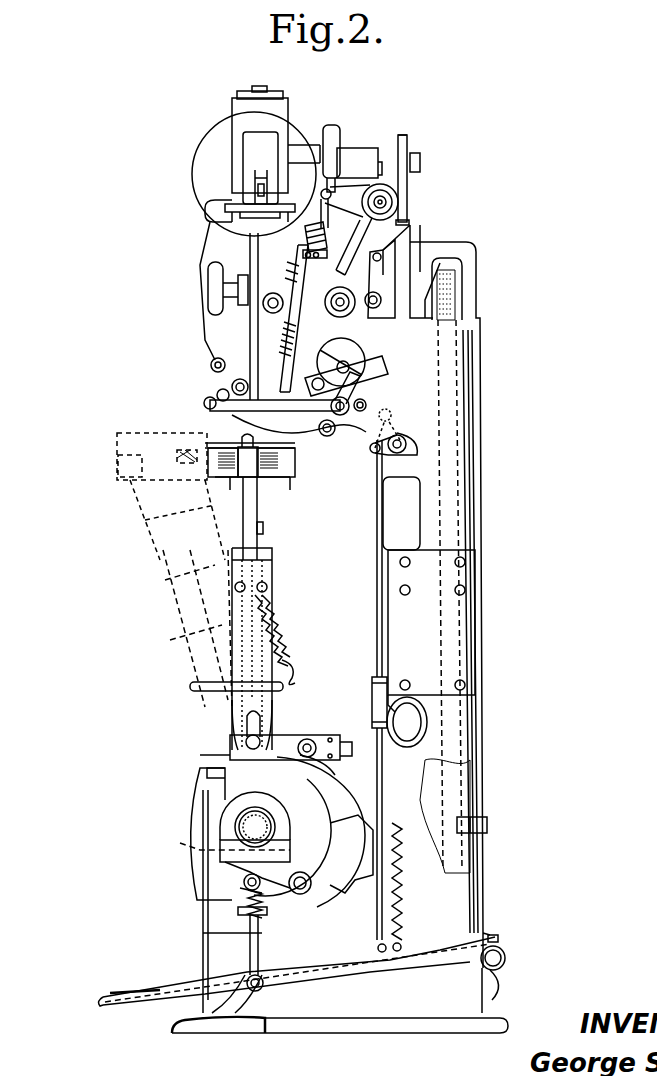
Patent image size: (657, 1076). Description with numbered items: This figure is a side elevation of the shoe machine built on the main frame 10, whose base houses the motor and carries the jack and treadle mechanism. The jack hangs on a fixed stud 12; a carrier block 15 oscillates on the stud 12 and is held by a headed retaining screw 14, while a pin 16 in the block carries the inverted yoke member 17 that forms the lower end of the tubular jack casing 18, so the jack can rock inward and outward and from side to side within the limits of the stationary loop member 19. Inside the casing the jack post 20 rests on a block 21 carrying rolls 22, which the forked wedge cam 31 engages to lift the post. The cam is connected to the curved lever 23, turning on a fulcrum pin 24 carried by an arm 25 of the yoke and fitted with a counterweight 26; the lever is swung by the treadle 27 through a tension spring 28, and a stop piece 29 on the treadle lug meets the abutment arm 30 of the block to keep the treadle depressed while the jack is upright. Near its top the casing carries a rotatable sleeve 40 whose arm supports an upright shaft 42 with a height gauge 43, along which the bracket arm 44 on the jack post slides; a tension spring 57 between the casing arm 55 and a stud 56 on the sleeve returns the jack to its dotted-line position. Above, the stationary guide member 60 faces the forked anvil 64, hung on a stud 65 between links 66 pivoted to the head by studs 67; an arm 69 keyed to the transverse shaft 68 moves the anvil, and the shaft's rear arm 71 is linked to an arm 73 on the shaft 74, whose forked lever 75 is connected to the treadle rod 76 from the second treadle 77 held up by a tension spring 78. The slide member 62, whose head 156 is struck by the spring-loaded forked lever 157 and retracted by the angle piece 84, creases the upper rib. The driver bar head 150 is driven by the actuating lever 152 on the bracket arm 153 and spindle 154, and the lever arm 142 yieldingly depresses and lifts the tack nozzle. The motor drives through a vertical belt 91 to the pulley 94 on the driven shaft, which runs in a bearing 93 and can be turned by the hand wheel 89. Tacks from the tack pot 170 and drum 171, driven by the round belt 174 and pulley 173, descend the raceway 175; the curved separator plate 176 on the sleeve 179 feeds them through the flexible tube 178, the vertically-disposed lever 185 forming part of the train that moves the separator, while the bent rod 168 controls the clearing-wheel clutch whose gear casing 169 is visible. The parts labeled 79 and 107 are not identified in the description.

The main frame 10 is at (460, 862).
The fixed horizontal stud 12 is at (218, 839).
The headed retaining screw 14 is at (250, 829).
The carrier block 15 is at (262, 872).
The pin 16 is at (220, 846).
The inverted yoke member 17 is at (228, 806).
The tubular jack casing 18 is at (236, 627).
The stationary loop member 19 is at (190, 686).
The jack post 20 is at (254, 634).
The block 21 is at (247, 730).
The rolls 22 is at (246, 742).
The curved lever 23 is at (344, 792).
The fulcrum pin 24 is at (303, 893).
The arm 25 is at (297, 866).
The counterweight 26 is at (356, 890).
The treadle 27 is at (234, 1012).
The tension spring 28 is at (255, 892).
The stop piece 29 is at (205, 935).
The abutment arm 30 is at (252, 874).
The forked wedge cam 31 is at (290, 738).
The rotatable sleeve 40 is at (178, 593).
The upright shaft 42 is at (250, 509).
The height gauge arm 43 is at (145, 440).
The bracket arm 44 is at (263, 528).
The rearwardly-extending arm 55 is at (290, 675).
The stud 56 is at (258, 584).
The tension spring 57 is at (276, 621).
The stationary guide member 60 is at (290, 430).
The slide member 62 is at (370, 399).
The rib-clamping anvil 64 is at (207, 443).
The stud 65 is at (217, 411).
The horizontal links 66 is at (300, 434).
The studs 67 is at (341, 417).
The transverse shaft 68 is at (211, 366).
The arm 69 is at (232, 388).
The downwardly-extending arm 71 is at (217, 395).
The arm 73 is at (393, 423).
The forwardly-extending shaft 74 is at (398, 452).
The forked lever 75 is at (378, 470).
The treadle rod 76 is at (383, 640).
The second treadle 77 is at (163, 994).
The tension spring 78 is at (404, 915).
The pivot sleeve 79 is at (501, 955).
The angle piece 84 is at (348, 360).
The hand wheel 89 is at (208, 290).
The vertical belt 91 is at (450, 300).
The bearing 93 is at (431, 299).
The pulley 94 is at (432, 264).
The pivot pin 107 is at (390, 417).
The lever arm 142 is at (284, 326).
The head 150 is at (318, 250).
The actuating lever 152 is at (386, 190).
The bracket arm 153 is at (354, 240).
The spindle 154 is at (392, 203).
The head 156 is at (386, 382).
The forked lever 157 is at (380, 360).
The bent rod 168 is at (205, 214).
The gear casing 169 is at (336, 143).
The tack pot 170 is at (280, 127).
The drum 171 is at (297, 132).
The pulley 173 is at (408, 158).
The round belt 174 is at (403, 134).
The raceway 175 is at (247, 172).
The curved separator plate 176 is at (237, 207).
The flexible tube 178 is at (283, 314).
The sleeve 179 is at (262, 240).
The vertically-disposed lever 185 is at (412, 253).